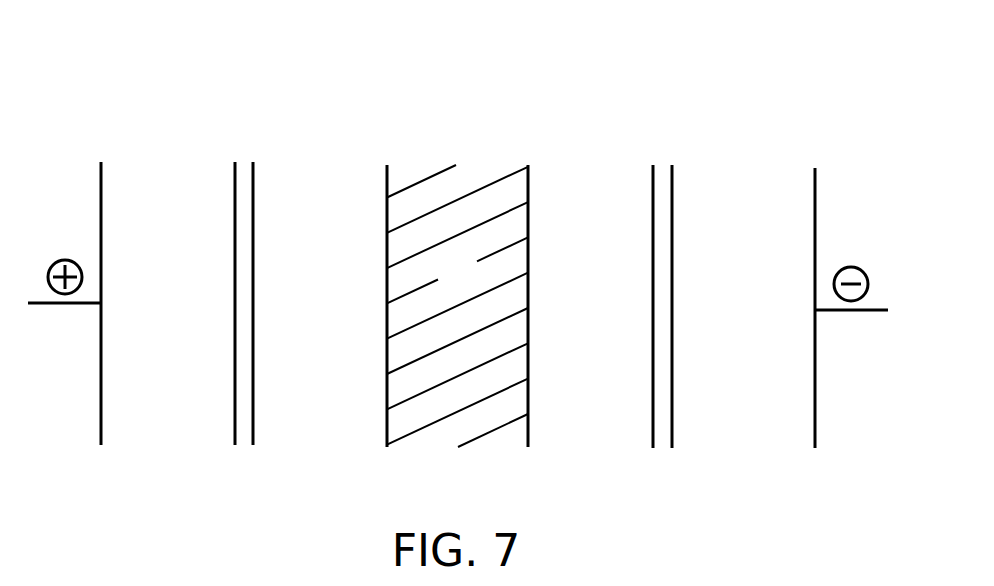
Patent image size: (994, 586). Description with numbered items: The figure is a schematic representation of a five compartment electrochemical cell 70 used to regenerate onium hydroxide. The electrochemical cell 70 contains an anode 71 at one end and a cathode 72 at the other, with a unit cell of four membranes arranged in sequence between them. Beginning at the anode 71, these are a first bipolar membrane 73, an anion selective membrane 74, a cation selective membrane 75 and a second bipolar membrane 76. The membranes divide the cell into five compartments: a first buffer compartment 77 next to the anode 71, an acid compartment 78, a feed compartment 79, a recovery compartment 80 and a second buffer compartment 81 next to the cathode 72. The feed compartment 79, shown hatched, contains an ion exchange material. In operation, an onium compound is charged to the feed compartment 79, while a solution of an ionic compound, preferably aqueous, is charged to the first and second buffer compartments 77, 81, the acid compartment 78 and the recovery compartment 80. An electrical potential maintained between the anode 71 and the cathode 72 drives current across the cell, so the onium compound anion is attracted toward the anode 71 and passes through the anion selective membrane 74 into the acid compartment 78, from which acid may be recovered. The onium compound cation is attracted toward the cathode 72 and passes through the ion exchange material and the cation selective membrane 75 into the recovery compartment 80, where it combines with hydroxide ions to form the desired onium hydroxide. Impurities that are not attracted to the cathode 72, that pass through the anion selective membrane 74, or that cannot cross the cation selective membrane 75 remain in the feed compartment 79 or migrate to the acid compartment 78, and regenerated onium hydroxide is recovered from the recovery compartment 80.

The electrochemical cell 70 is at (138, 93).
The anode 71 is at (72, 287).
The cathode 72 is at (843, 292).
The first bipolar membrane 73 is at (245, 310).
The anion selective membrane 74 is at (387, 310).
The cation selective membrane 75 is at (527, 310).
The second bipolar membrane 76 is at (663, 311).
The first buffer compartment 77 is at (171, 303).
The acid compartment 78 is at (314, 303).
The feed compartment 79 is at (457, 306).
The recovery compartment 80 is at (597, 303).
The second buffer compartment 81 is at (736, 307).